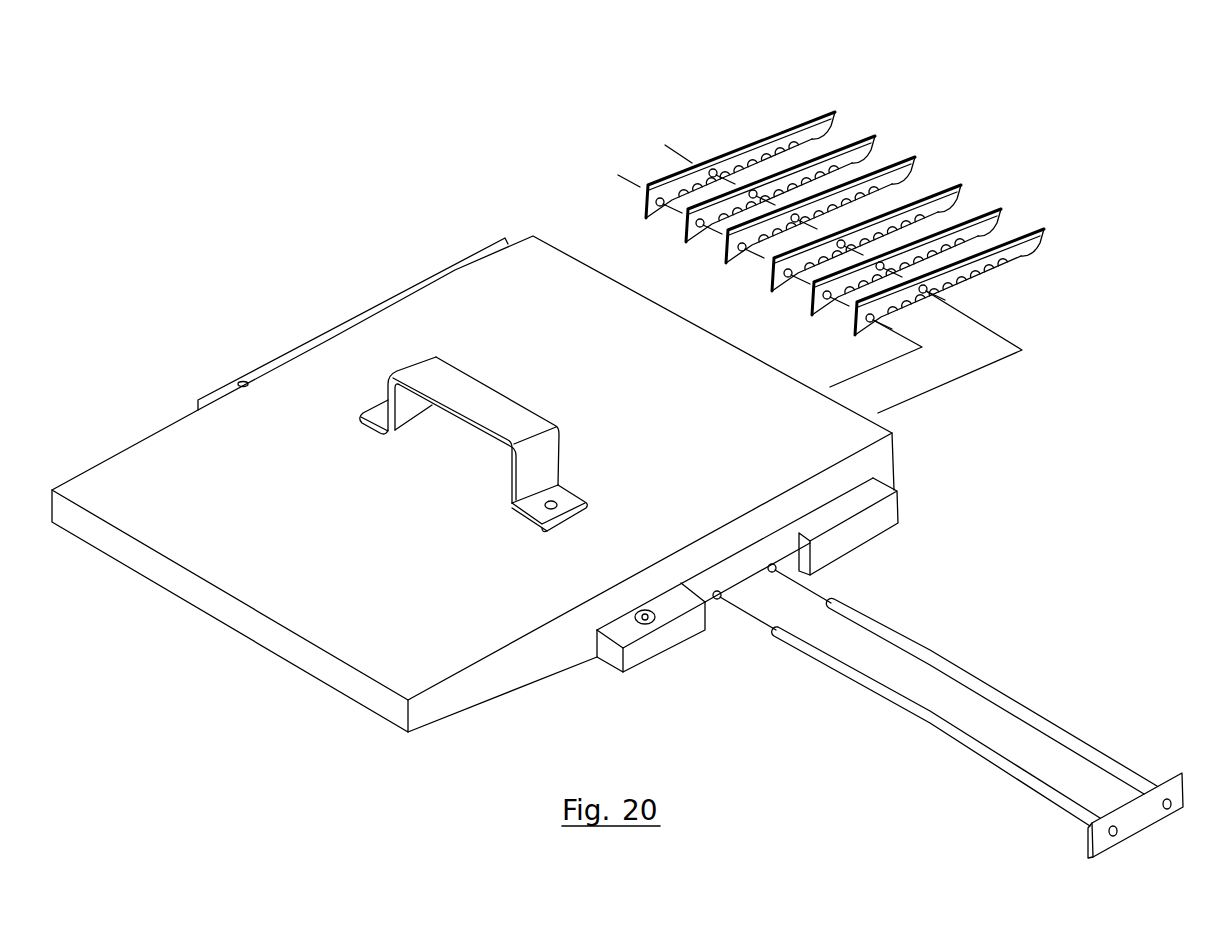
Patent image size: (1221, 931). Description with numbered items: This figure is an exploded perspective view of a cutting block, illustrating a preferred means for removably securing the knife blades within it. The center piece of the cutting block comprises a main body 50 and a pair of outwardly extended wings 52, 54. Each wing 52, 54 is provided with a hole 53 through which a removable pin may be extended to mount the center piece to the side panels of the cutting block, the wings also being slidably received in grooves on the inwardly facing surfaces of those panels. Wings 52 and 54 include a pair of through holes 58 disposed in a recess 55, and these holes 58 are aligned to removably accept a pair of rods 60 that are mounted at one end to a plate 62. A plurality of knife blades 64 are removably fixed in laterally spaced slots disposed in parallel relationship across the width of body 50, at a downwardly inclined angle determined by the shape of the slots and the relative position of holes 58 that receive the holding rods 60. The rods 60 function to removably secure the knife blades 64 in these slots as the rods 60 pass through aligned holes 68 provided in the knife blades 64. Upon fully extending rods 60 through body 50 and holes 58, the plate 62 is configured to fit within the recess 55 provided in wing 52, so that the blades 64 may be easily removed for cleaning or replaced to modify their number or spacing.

The main body 50 is at (130, 447).
The wing 52 is at (903, 497).
The hole 53 is at (647, 622).
The wing 54 is at (473, 248).
The recess 55 is at (718, 602).
The through holes 58 is at (777, 569).
The rods 60 is at (1027, 707).
The plate 62 is at (1143, 833).
The knife blade 64 is at (1093, 278).
The holes 68 is at (661, 197).